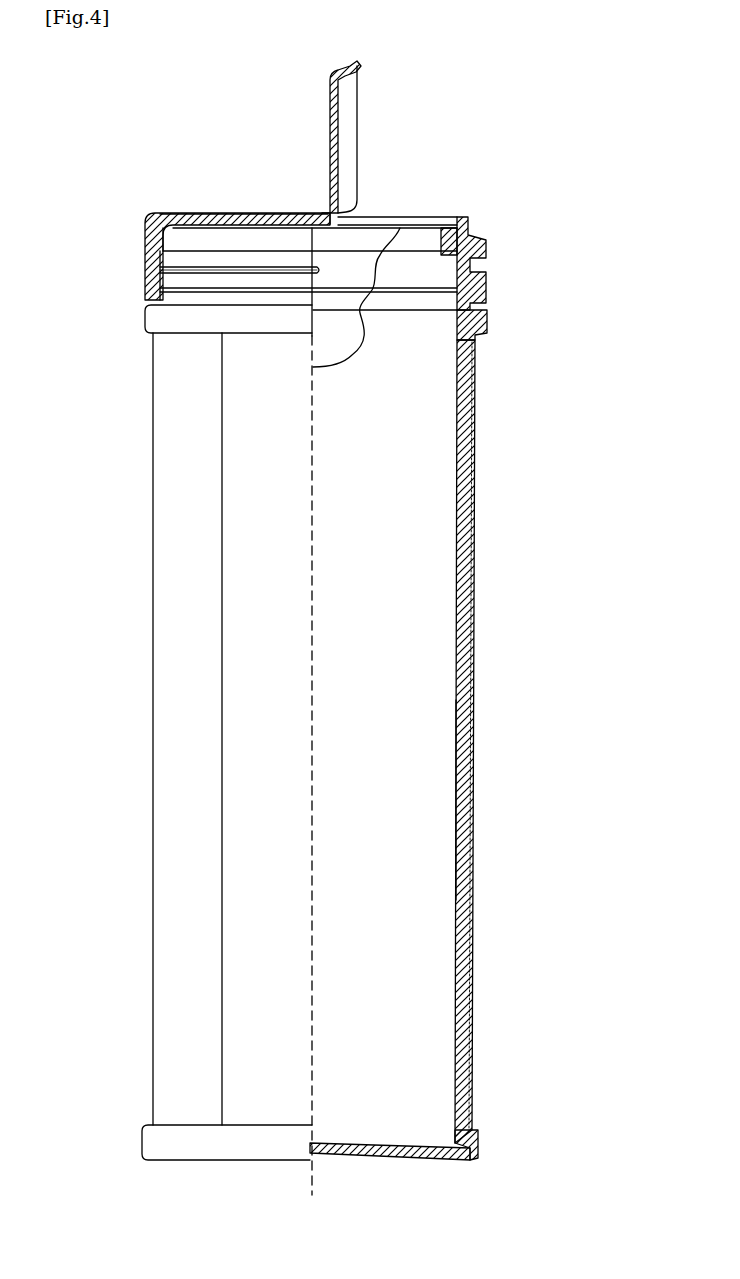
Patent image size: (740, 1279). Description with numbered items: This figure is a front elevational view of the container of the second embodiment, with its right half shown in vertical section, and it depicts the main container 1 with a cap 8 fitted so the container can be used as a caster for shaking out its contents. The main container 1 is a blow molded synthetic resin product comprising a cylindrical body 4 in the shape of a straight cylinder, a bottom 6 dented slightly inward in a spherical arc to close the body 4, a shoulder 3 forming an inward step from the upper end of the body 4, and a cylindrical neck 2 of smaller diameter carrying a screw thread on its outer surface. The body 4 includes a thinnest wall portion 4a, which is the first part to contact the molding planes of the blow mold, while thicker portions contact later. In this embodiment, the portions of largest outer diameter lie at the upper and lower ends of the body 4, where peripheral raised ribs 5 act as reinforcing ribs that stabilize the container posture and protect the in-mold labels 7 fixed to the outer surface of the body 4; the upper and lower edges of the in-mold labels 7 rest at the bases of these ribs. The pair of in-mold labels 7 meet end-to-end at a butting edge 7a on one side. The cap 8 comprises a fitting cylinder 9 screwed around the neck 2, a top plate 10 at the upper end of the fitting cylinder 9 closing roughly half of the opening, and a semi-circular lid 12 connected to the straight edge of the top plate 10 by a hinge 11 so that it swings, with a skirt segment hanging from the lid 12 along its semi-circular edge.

The main container 1 is at (530, 575).
The neck 2 is at (463, 258).
The shoulder 3 is at (220, 305).
The cylindrical body 4 is at (463, 863).
The thinnest wall portion 4a is at (463, 697).
The peripheral raised rib 5 is at (488, 317).
The bottom 6 is at (352, 1160).
The in-mold label 7 is at (178, 572).
The butting edge 7a is at (222, 798).
The cap 8 is at (223, 199).
The fitting cylinder 9 is at (167, 265).
The top plate 10 is at (275, 213).
The hinge 11 is at (327, 213).
The lid 12 is at (338, 120).